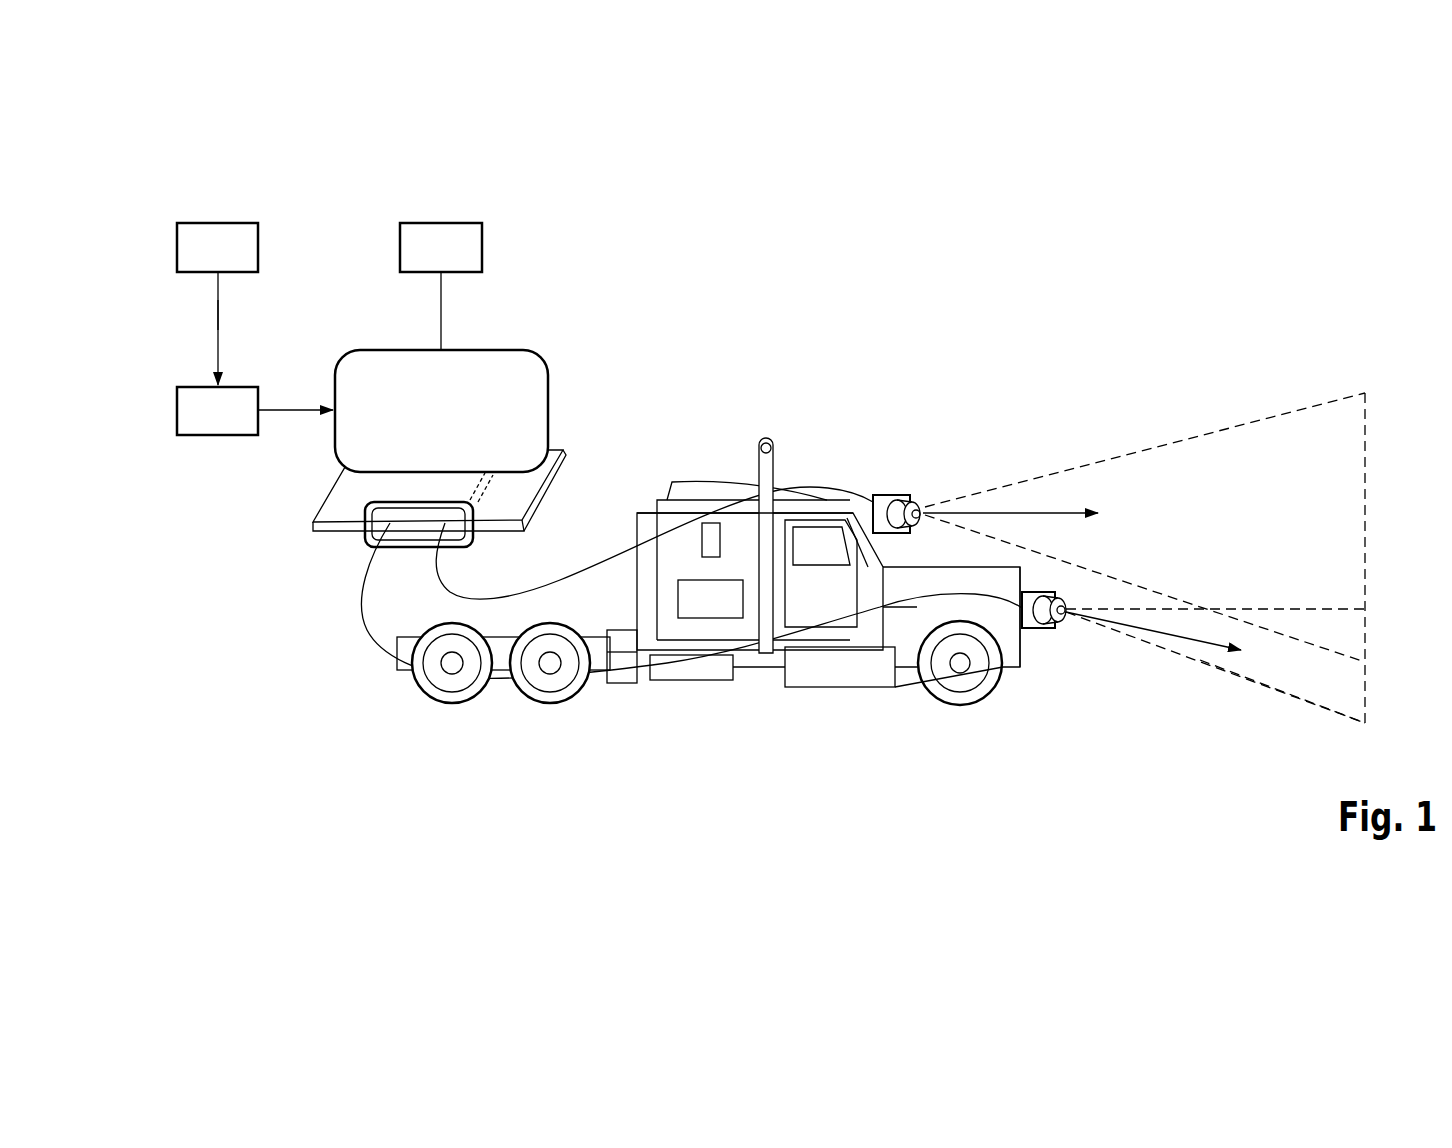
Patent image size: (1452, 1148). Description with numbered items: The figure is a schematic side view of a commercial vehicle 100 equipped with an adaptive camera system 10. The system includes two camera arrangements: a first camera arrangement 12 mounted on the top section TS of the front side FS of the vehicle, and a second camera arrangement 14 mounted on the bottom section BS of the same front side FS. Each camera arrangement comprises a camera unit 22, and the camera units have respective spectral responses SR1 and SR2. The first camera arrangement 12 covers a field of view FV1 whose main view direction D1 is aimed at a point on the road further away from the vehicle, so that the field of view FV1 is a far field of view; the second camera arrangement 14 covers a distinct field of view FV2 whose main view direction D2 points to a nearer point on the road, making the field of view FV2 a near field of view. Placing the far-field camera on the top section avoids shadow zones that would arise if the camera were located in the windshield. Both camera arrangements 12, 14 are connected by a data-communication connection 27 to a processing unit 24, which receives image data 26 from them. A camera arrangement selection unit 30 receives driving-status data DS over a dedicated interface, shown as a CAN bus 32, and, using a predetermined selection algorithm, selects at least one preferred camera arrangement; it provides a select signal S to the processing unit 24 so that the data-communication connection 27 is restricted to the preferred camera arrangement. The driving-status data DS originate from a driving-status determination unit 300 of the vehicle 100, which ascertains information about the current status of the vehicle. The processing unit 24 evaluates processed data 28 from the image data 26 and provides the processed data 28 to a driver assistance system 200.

The driving-status determination unit 300 is at (218, 223).
The driver assistance system 200 is at (441, 223).
The camera arrangement selection unit 30 is at (197, 387).
The CAN bus 32 is at (218, 298).
The driving-status data DS is at (222, 318).
The processed data 28 is at (437, 305).
The select signal S is at (292, 415).
The processing unit 24 is at (508, 350).
The data-communication connection 27 is at (430, 572).
The image data 26 is at (367, 637).
The adaptive camera system 10 is at (881, 549).
The commercial vehicle 100 is at (707, 462).
The top section TS is at (870, 460).
The front side FS is at (895, 707).
The bottom section BS is at (975, 720).
The first camera arrangement 12 is at (915, 483).
The spectral response SR1 is at (928, 500).
The main view direction D1 is at (1032, 517).
The field of view FV1 is at (1185, 440).
The second camera arrangement 14 is at (1070, 632).
The camera unit 22 is at (1040, 630).
The spectral response SR2 is at (1066, 650).
The main view direction D2 is at (1175, 641).
The field of view FV2 is at (1268, 688).